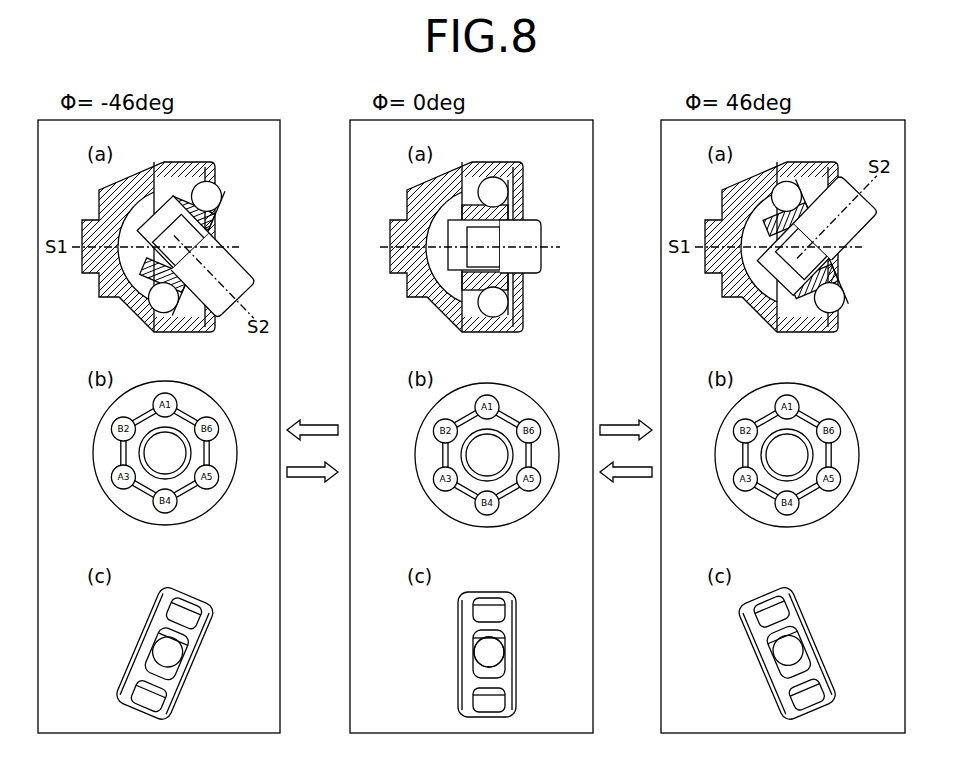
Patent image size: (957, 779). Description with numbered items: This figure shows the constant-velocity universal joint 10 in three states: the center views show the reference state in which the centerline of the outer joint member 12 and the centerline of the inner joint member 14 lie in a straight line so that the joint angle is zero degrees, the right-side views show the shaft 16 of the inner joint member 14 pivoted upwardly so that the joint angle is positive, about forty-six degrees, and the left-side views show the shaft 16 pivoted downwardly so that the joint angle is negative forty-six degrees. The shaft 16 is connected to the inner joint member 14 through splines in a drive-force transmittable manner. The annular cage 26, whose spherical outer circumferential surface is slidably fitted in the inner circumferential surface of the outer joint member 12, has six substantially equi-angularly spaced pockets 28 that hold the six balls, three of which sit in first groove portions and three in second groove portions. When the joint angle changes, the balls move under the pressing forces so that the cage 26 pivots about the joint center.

The constant-velocity universal joint 10 is at (548, 327).
The outer joint member 12 is at (492, 165).
The inner joint member 14 is at (522, 278).
The shaft 16 is at (533, 203).
The cage 26 is at (508, 620).
The pockets 28 is at (475, 658).